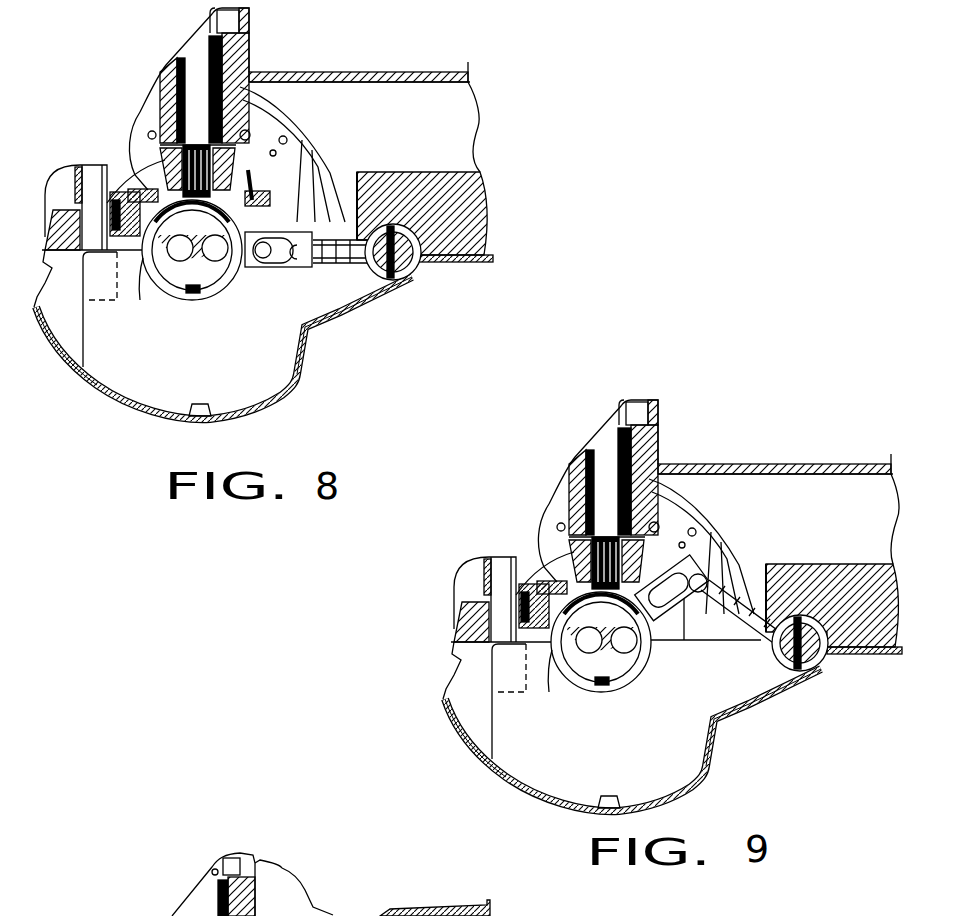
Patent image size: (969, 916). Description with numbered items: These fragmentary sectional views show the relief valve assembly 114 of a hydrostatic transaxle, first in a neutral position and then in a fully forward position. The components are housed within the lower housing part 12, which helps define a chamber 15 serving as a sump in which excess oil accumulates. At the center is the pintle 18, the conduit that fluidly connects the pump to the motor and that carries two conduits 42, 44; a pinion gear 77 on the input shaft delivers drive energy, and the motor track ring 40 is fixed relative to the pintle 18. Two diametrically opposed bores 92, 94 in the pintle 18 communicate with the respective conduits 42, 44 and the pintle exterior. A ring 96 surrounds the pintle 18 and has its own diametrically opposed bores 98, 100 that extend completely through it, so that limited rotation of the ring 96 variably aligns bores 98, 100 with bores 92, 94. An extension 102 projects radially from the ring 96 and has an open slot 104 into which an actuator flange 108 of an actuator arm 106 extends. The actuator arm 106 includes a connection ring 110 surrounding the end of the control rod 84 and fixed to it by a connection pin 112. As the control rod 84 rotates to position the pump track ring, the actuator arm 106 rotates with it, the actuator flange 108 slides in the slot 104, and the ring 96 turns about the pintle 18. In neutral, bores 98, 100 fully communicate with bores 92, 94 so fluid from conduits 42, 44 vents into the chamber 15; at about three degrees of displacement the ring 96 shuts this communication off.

In FIG. 8, the lower housing part 12 is at (312, 367).
In FIG. 9, the lower housing part 12 is at (735, 752).
In FIG. 8, the chamber 15 is at (188, 387).
In FIG. 9, the chamber 15 is at (531, 741).
In FIG. 8, the pintle 18 is at (188, 231).
In FIG. 9, the pintle 18 is at (601, 642).
In FIG. 8, the motor track ring 40 is at (142, 175).
In FIG. 9, the motor track ring 40 is at (523, 557).
In FIG. 8, the conduit 42 is at (213, 260).
In FIG. 9, the conduit 42 is at (622, 682).
In FIG. 8, the conduit 44 is at (181, 258).
In FIG. 9, the conduit 44 is at (509, 653).
In FIG. 8, the pinion gear 77 is at (133, 165).
In FIG. 9, the pinion gear 77 is at (537, 527).
In FIG. 8, the control rod 84 is at (418, 282).
In FIG. 9, the control rod 84 is at (817, 654).
In FIG. 8, the bore 92 is at (246, 137).
In FIG. 9, the bore 92 is at (695, 609).
In FIG. 8, the bore 94 is at (175, 265).
In FIG. 9, the bore 94 is at (531, 642).
In FIG. 8, the ring 96 is at (194, 303).
In FIG. 9, the ring 96 is at (579, 707).
In FIG. 8, the bore 98 is at (235, 282).
In FIG. 9, the bore 98 is at (630, 671).
In FIG. 8, the bore 100 is at (144, 257).
In FIG. 9, the bore 100 is at (533, 682).
In FIG. 8, the extension 102 is at (281, 268).
In FIG. 9, the extension 102 is at (676, 616).
In FIG. 8, the open slot 104 is at (308, 266).
In FIG. 9, the open slot 104 is at (742, 622).
In FIG. 8, the actuator arm 106 is at (357, 200).
In FIG. 9, the actuator arm 106 is at (777, 575).
In FIG. 8, the actuator flange 108 is at (263, 258).
In FIG. 9, the actuator flange 108 is at (719, 537).
In FIG. 8, the connection ring 110 is at (427, 200).
In FIG. 9, the connection ring 110 is at (864, 633).
In FIG. 8, the connection pin 112 is at (398, 190).
In FIG. 9, the connection pin 112 is at (832, 605).
In FIG. 8, the relief valve assembly 114 is at (346, 329).
In FIG. 9, the relief valve assembly 114 is at (783, 717).